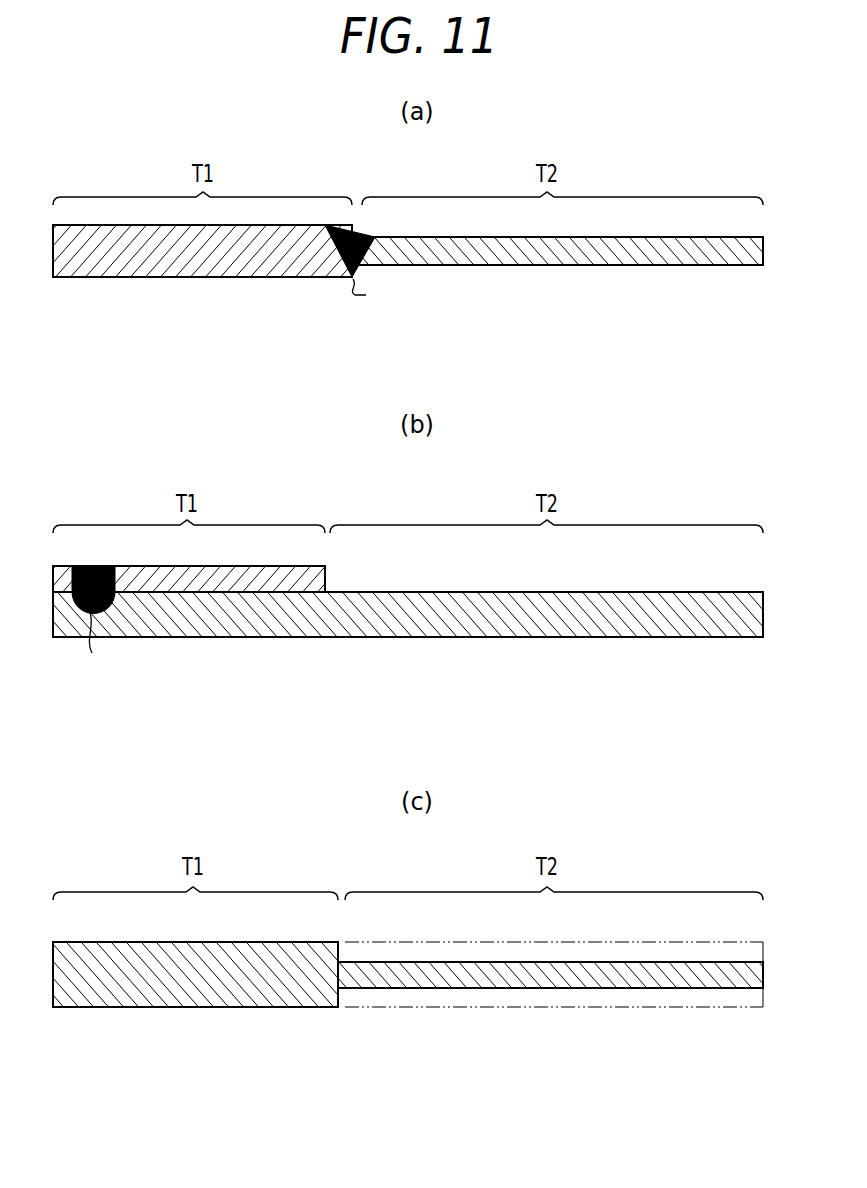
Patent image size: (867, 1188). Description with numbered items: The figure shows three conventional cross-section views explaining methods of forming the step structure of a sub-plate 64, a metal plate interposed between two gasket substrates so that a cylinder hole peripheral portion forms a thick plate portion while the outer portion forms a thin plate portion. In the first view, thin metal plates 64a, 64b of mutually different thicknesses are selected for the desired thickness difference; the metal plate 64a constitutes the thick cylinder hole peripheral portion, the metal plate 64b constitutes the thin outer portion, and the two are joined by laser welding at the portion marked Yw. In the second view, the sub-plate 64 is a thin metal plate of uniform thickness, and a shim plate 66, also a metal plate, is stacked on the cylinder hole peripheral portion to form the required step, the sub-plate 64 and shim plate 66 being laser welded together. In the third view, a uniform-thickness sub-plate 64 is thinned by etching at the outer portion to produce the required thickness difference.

The sub-plate 64 is at (408, 641).
The metal plate 64a is at (197, 255).
The metal plate 64b is at (500, 258).
The shim plate 66 is at (315, 578).